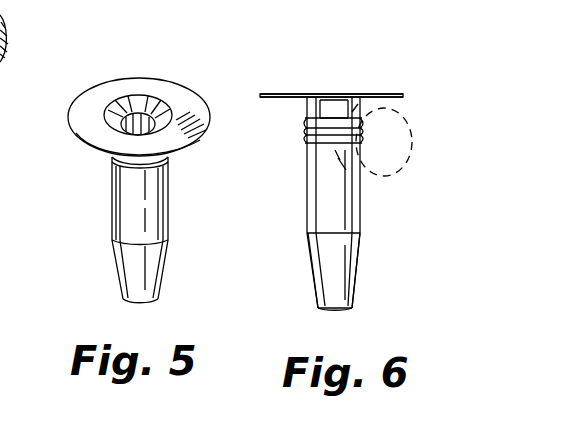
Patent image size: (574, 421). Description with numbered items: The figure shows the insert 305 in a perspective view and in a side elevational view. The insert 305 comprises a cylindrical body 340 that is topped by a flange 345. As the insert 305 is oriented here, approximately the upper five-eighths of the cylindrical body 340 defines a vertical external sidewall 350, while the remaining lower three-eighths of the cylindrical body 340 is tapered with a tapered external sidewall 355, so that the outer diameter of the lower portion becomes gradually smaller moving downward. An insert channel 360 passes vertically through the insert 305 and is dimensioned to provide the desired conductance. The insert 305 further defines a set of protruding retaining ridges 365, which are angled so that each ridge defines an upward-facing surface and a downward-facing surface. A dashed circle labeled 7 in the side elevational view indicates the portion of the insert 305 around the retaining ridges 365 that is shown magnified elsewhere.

In FIG. 5, the insert 305 is at (193, 78).
In FIG. 6, the insert 305 is at (388, 77).
In FIG. 5, the cylindrical body 340 is at (170, 222).
In FIG. 6, the cylindrical body 340 is at (293, 231).
In FIG. 5, the flange 345 is at (84, 113).
In FIG. 6, the flange 345 is at (288, 72).
In FIG. 6, the vertical external sidewall 350 is at (360, 222).
In FIG. 6, the tapered external sidewall 355 is at (357, 277).
In FIG. 5, the insert channel 360 is at (138, 116).
In FIG. 6, the retaining ridges 365 is at (298, 140).
In FIG. 6, the detail view area 7 is at (404, 165).